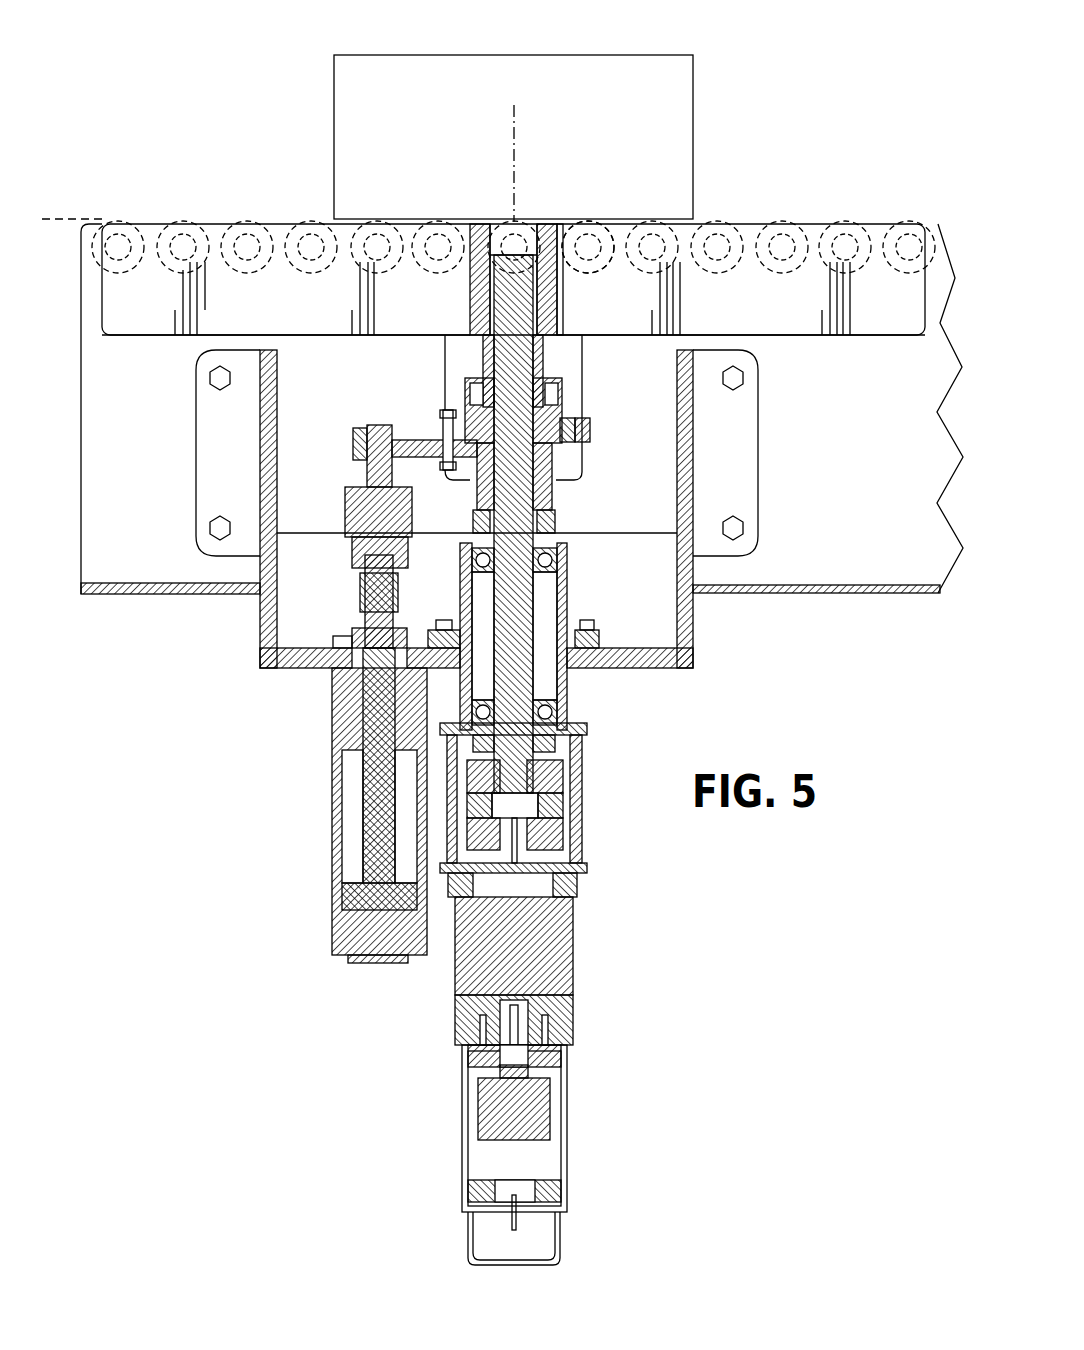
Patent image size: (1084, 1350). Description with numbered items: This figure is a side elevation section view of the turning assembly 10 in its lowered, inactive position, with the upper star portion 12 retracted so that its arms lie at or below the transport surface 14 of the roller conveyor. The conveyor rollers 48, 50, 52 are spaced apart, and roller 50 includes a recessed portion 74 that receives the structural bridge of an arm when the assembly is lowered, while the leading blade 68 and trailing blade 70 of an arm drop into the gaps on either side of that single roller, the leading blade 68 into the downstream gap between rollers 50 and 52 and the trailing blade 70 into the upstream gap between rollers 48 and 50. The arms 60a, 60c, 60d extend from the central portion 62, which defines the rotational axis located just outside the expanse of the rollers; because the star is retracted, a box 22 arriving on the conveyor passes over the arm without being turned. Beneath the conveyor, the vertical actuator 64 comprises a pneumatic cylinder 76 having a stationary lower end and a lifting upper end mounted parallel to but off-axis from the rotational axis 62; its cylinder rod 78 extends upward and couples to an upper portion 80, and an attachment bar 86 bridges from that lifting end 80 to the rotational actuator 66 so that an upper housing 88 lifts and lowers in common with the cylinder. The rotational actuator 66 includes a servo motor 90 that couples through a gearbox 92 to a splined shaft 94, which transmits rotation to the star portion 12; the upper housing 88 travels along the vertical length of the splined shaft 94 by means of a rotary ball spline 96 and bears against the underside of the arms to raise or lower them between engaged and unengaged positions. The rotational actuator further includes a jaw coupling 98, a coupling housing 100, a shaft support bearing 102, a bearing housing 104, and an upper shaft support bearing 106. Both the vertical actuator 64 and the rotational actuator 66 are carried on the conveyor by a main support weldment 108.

The turning assembly 10 is at (243, 713).
The upper star portion 12 is at (305, 194).
The transport surface 14 is at (68, 214).
The box 22 is at (600, 55).
The roller 48 is at (588, 222).
The roller 50 is at (496, 222).
The roller 52 is at (440, 222).
The arm 60a is at (215, 214).
The arm 60c is at (755, 214).
The arm 60d is at (562, 289).
The central portion 62 is at (512, 135).
The vertical actuator 64 is at (323, 738).
The rotational actuator 66 is at (590, 1040).
The leading blade 68 is at (305, 301).
The trailing blade 70 is at (757, 301).
The recessed portion 74 is at (526, 228).
The pneumatic cylinder 76 is at (332, 842).
The cylinder rod 78 is at (363, 783).
The upper portion 80 is at (345, 508).
The attachment bar 86 is at (420, 440).
The upper housing 88 is at (560, 488).
The servo motor 90 is at (573, 1120).
The gearbox 92 is at (527, 952).
The splined shaft 94 is at (490, 603).
The rotary ball spline 96 is at (590, 434).
The jaw coupling 98 is at (568, 810).
The coupling housing 100 is at (587, 766).
The shaft support bearing 102 is at (566, 688).
The bearing housing 104 is at (568, 610).
The upper shaft support bearing 106 is at (563, 585).
The main support weldment 108 is at (758, 452).